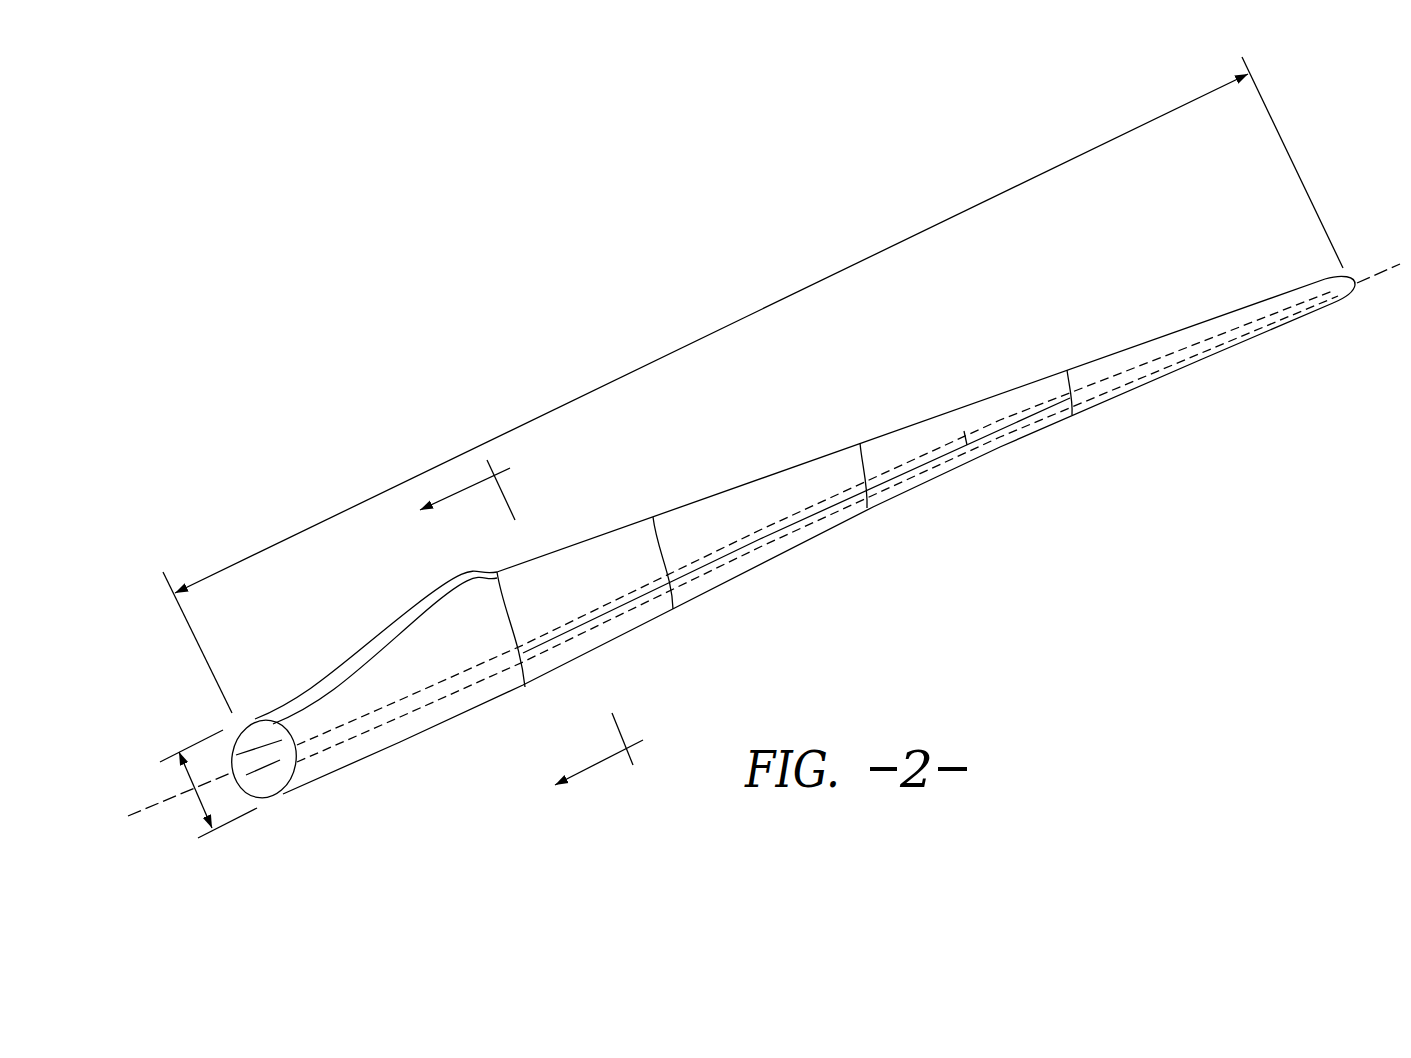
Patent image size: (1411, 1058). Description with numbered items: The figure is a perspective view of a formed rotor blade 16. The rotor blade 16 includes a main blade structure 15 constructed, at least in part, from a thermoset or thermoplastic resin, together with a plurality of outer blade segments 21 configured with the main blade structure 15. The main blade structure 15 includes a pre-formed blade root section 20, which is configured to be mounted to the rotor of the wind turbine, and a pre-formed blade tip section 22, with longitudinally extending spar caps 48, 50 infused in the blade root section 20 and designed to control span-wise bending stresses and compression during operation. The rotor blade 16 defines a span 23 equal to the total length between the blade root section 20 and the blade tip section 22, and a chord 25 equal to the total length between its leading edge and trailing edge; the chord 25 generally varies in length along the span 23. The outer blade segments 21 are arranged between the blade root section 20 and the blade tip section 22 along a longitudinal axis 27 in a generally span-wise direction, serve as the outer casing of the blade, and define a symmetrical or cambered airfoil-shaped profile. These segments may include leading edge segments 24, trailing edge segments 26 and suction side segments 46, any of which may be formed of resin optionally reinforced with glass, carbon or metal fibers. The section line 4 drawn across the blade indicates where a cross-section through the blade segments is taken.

The section line 4- 4 is at (513, 634).
The main blade structure 15 is at (438, 699).
The rotor blade 16 is at (764, 481).
The blade root section 20 is at (328, 687).
The outer blade segment 21 is at (521, 565).
The blade tip section 22 is at (1217, 355).
The span 23 is at (727, 323).
The leading edge segment 24 is at (567, 663).
The chord 25 is at (223, 780).
The trailing edge segment 26 is at (580, 557).
The longitudinal axis 27 is at (240, 835).
The suction side segment 46 is at (1020, 397).
The spar cap 48 is at (237, 755).
The spar cap 50 is at (378, 725).